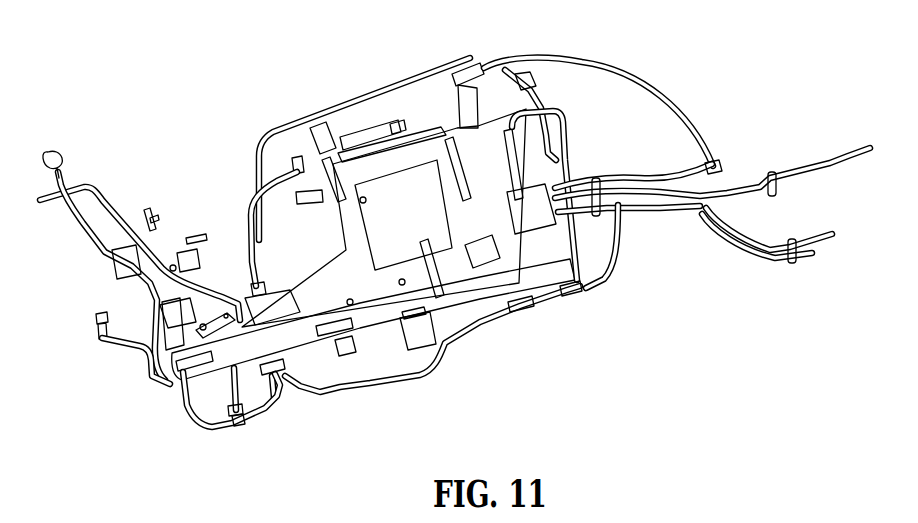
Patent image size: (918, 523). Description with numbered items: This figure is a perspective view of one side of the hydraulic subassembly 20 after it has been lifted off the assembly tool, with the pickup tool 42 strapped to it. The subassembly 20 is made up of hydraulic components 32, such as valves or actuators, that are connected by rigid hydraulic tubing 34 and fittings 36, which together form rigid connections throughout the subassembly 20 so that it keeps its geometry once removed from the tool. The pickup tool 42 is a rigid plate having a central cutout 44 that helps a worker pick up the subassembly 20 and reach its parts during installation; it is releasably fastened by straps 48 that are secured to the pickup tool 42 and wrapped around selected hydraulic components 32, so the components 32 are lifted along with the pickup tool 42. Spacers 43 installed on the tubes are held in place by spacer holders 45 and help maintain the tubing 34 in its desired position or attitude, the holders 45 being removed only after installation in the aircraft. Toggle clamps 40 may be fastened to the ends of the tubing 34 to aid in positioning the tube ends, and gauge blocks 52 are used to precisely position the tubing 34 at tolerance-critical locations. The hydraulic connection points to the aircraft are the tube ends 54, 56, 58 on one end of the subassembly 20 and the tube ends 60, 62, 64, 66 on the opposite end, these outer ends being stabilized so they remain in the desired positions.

The hydraulic subassembly 20 is at (602, 382).
The hydraulic components 32 is at (379, 126).
The hydraulic tubing 34 is at (673, 102).
The fittings 36 is at (257, 284).
The toggle clamps 40 is at (172, 265).
The pickup tool 42 is at (516, 78).
The spacers 43 is at (595, 176).
The central cutout 44 is at (345, 185).
The spacer holders 45 is at (623, 240).
The straps 48 is at (323, 126).
The gauge blocks 52 is at (150, 220).
The tube end 54 is at (870, 150).
The tube end 56 is at (836, 236).
The tube end 58 is at (808, 253).
The tube end 60 is at (100, 313).
The tube end 62 is at (42, 198).
The tube end 64 is at (54, 186).
The tube end 66 is at (48, 153).